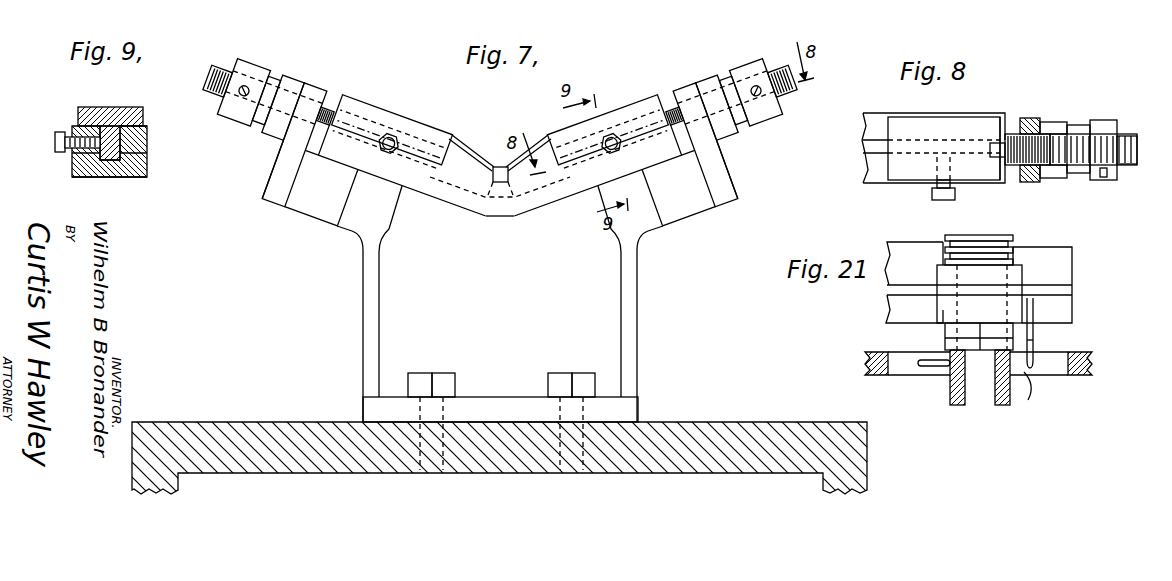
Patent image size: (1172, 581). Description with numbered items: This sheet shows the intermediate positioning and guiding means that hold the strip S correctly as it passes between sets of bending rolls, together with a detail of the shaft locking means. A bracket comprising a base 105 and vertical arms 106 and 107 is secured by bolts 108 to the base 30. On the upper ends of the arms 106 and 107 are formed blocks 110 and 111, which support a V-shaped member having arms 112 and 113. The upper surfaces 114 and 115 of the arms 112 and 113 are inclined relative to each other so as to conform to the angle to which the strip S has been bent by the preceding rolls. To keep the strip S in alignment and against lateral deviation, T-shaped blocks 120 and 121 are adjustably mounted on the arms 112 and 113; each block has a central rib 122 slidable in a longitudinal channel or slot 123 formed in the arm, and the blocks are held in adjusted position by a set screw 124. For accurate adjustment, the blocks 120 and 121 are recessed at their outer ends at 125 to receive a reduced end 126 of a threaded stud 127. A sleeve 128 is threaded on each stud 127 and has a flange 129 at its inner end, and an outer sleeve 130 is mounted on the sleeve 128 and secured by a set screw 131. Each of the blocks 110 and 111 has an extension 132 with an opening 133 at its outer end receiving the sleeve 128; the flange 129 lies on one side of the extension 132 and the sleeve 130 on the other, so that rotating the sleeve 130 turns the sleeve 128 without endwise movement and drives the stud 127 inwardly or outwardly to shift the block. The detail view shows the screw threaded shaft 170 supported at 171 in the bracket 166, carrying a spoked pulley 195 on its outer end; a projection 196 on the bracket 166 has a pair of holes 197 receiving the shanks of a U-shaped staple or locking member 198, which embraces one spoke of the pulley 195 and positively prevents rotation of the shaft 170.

In FIG. 7, the base 30 is at (797, 423).
In FIG. 7, the base 105 is at (494, 394).
In FIG. 7, the vertical arm 106 is at (380, 338).
In FIG. 7, the vertical arm 107 is at (637, 308).
In FIG. 7, the bolts 108 is at (441, 373).
In FIG. 7, the block 110 is at (318, 207).
In FIG. 7, the block 111 is at (680, 212).
In FIG. 7, the arm 112 is at (435, 190).
In FIG. 7, the arm 113 is at (569, 192).
In FIG. 9, the arm 113 is at (137, 178).
In FIG. 8, the arm 113 is at (868, 181).
In FIG. 7, the upper surface 114 is at (438, 140).
In FIG. 7, the upper surface 115 is at (568, 145).
In FIG. 9, the upper surface 115 is at (147, 126).
In FIG. 8, the upper surface 115 is at (870, 130).
In FIG. 7, the T-shaped block 120 is at (417, 127).
In FIG. 7, the T-shaped block 121 is at (637, 103).
In FIG. 9, the T-shaped block 121 is at (80, 106).
In FIG. 8, the T-shaped block 121 is at (912, 120).
In FIG. 7, the central rib 122 is at (667, 197).
In FIG. 9, the central rib 122 is at (112, 145).
In FIG. 7, the longitudinal channel or slot 123 is at (540, 195).
In FIG. 9, the longitudinal channel or slot 123 is at (149, 157).
In FIG. 8, the longitudinal channel or slot 123 is at (866, 150).
In FIG. 7, the set screw 124 is at (390, 136).
In FIG. 9, the set screw 124 is at (55, 141).
In FIG. 8, the set screw 124 is at (936, 197).
In FIG. 8, the recess 125 is at (998, 120).
In FIG. 8, the reduced end 126 is at (995, 160).
In FIG. 7, the threaded stud 127 is at (217, 70).
In FIG. 8, the threaded stud 127 is at (1137, 150).
In FIG. 7, the sleeve 128 is at (273, 127).
In FIG. 8, the sleeve 128 is at (1118, 128).
In FIG. 7, the flange 129 is at (320, 115).
In FIG. 8, the flange 129 is at (1018, 122).
In FIG. 7, the sleeve 130 is at (272, 83).
In FIG. 8, the sleeve 130 is at (1054, 182).
In FIG. 7, the set screw 131 is at (247, 87).
In FIG. 8, the set screw 131 is at (1101, 180).
In FIG. 7, the extension 132 is at (315, 87).
In FIG. 8, the extension 132 is at (1040, 117).
In FIG. 7, the opening 133 is at (278, 155).
In FIG. 8, the opening 133 is at (1060, 121).
In FIG. 21, the bracket 166 is at (1060, 293).
In FIG. 21, the screw threaded shaft 170 is at (1015, 243).
In FIG. 21, the support 171 is at (1007, 277).
In FIG. 21, the pulley 195 is at (866, 352).
In FIG. 21, the projection 196 is at (1036, 313).
In FIG. 21, the holes 197 is at (1036, 338).
In FIG. 21, the U-shaped staple or locking member 198 is at (1030, 398).
In FIG. 7, the strip S is at (486, 203).